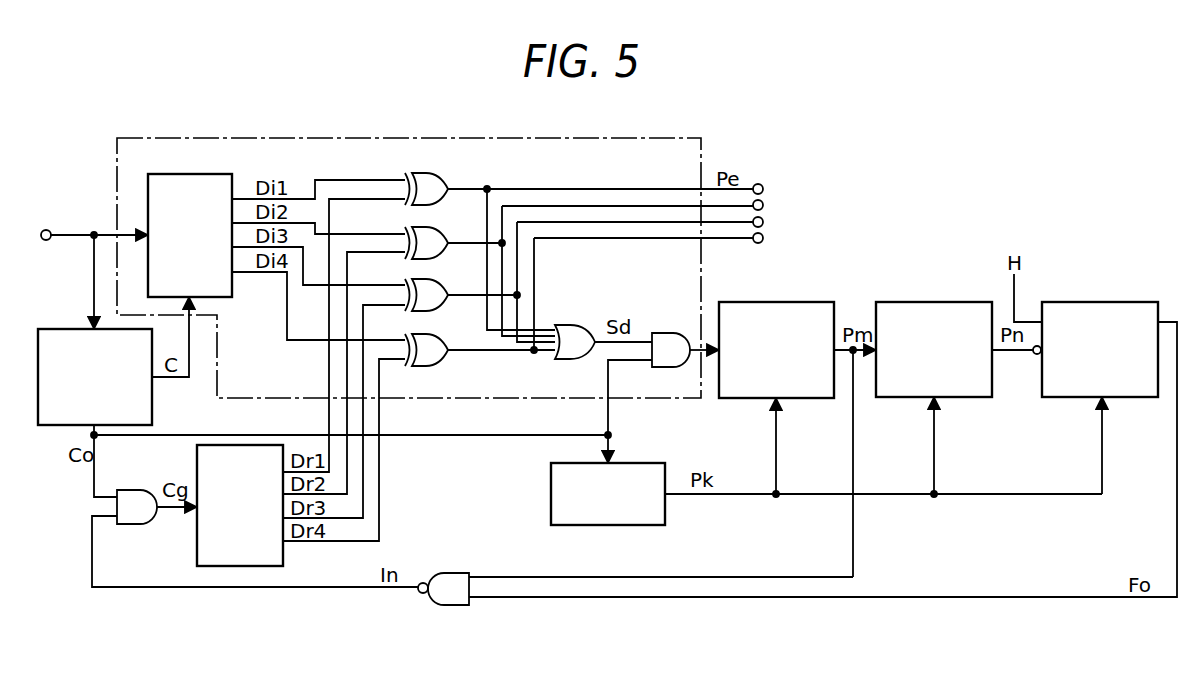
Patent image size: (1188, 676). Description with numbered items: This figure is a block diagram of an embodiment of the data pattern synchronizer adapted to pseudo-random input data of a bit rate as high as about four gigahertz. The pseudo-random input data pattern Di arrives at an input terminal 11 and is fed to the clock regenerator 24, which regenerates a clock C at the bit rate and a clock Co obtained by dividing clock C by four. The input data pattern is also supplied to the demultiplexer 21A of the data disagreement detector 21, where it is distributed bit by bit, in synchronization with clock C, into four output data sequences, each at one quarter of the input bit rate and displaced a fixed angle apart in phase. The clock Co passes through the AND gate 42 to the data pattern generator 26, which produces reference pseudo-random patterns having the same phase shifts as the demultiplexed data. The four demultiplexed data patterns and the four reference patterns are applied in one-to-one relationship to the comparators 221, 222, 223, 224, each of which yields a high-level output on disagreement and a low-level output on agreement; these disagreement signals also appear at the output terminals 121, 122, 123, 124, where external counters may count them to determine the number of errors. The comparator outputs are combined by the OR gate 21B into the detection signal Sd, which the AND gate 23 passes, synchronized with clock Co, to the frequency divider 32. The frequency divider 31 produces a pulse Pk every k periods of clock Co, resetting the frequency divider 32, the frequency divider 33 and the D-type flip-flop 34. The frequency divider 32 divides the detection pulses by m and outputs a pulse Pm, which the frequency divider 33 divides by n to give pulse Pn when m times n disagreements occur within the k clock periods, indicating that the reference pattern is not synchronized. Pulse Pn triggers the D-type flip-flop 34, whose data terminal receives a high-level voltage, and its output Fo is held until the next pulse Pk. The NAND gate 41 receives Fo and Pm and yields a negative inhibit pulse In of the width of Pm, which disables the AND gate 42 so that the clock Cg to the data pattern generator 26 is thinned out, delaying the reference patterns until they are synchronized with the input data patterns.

The input terminal 11 is at (43, 241).
The data disagreement detector 21 is at (648, 136).
The demultiplexer 21A is at (185, 174).
The OR gate 21B is at (569, 325).
The comparator 221 is at (438, 174).
The comparator 222 is at (438, 228).
The comparator 223 is at (438, 280).
The comparator 224 is at (438, 335).
The output terminal 121 is at (763, 187).
The output terminal 122 is at (763, 205).
The output terminal 123 is at (763, 224).
The output terminal 124 is at (762, 242).
The AND gate 23 is at (668, 333).
The clock regenerator 24 is at (70, 329).
The data pattern generator 26 is at (197, 548).
The frequency divider 31 is at (622, 526).
The frequency divider 32 is at (746, 302).
The frequency divider 33 is at (905, 302).
The D-type flip-flop 34 is at (1075, 302).
The NAND gate 41 is at (447, 573).
The AND gate 42 is at (133, 490).